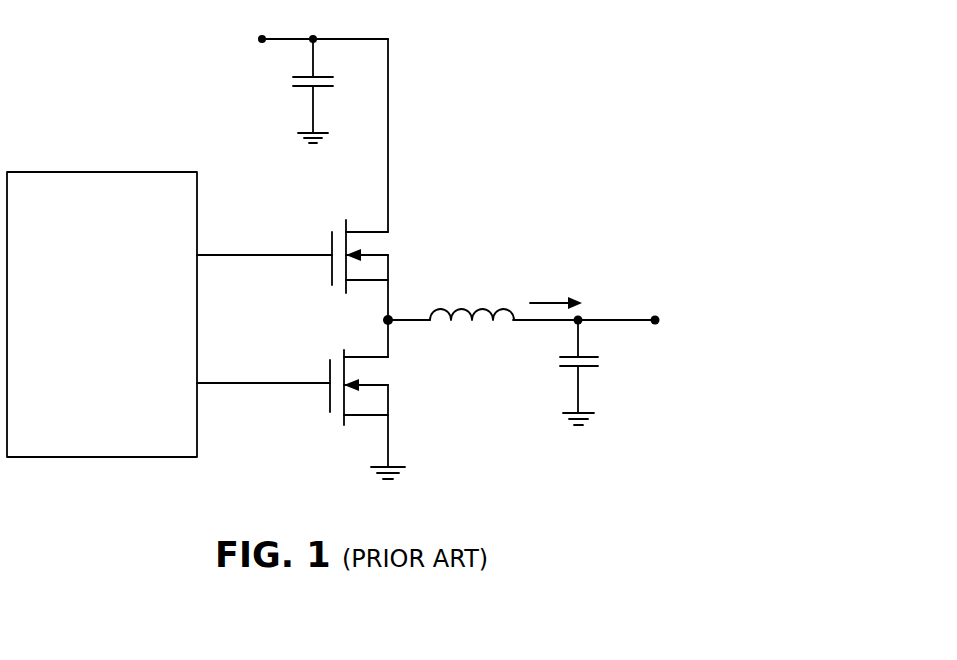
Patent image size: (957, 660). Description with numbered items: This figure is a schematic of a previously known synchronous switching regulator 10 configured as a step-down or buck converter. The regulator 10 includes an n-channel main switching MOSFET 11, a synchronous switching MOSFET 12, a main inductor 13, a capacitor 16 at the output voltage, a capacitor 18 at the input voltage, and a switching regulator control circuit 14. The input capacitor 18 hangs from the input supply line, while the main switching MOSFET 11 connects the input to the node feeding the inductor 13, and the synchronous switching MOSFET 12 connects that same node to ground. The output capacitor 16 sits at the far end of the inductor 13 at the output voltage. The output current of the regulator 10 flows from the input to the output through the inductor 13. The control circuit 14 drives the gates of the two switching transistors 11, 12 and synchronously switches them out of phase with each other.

The synchronous switching regulator 10 is at (568, 103).
The main switching MOSFET 11 is at (388, 258).
The synchronous switching MOSFET 12 is at (388, 398).
The main inductor 13 is at (443, 305).
The switching regulator control circuit 14 is at (95, 172).
The capacitor 16 is at (568, 371).
The capacitor 18 is at (322, 74).